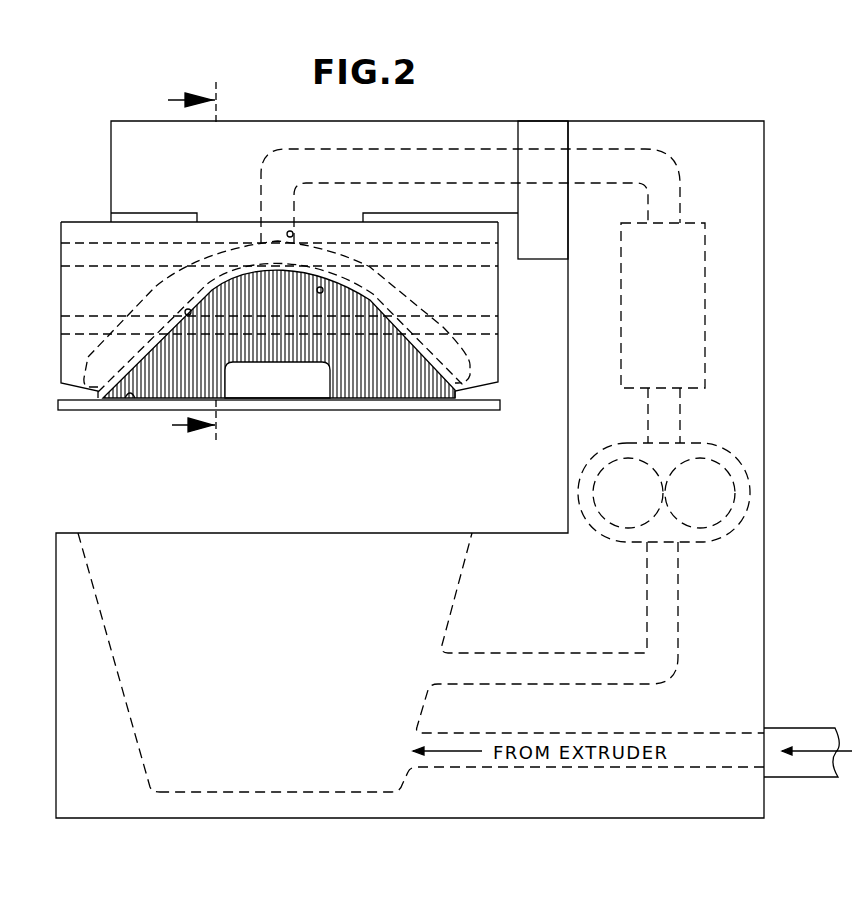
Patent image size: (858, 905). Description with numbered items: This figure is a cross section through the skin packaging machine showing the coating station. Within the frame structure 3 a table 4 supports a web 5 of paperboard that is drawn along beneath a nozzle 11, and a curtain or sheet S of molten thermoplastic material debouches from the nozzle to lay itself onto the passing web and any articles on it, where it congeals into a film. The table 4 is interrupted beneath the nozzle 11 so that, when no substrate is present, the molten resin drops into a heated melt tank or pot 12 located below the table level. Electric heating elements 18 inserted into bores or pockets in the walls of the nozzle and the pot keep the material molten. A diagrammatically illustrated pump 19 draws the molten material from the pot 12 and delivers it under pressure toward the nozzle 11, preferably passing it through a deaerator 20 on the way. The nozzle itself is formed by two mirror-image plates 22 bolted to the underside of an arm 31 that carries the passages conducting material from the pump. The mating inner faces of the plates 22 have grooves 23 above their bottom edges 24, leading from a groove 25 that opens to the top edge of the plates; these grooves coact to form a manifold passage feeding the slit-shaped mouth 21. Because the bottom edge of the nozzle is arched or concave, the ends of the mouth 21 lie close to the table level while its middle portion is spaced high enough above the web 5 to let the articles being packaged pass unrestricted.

The frame structure 3 is at (199, 261).
The table 4 is at (68, 400).
The web 5 is at (130, 390).
The nozzle 11 is at (78, 280).
The melt tank or pot 12 is at (92, 558).
The electric heating elements 18 is at (78, 243).
The pump 19 is at (742, 460).
The deaerator 20 is at (706, 300).
The mouth 21 is at (322, 290).
The plates 22 is at (485, 346).
The grooves 23 is at (398, 292).
The bottom edges 24 is at (186, 310).
The groove 25 is at (293, 234).
The arm 31 is at (358, 138).
The curtain or sheet S is at (385, 375).